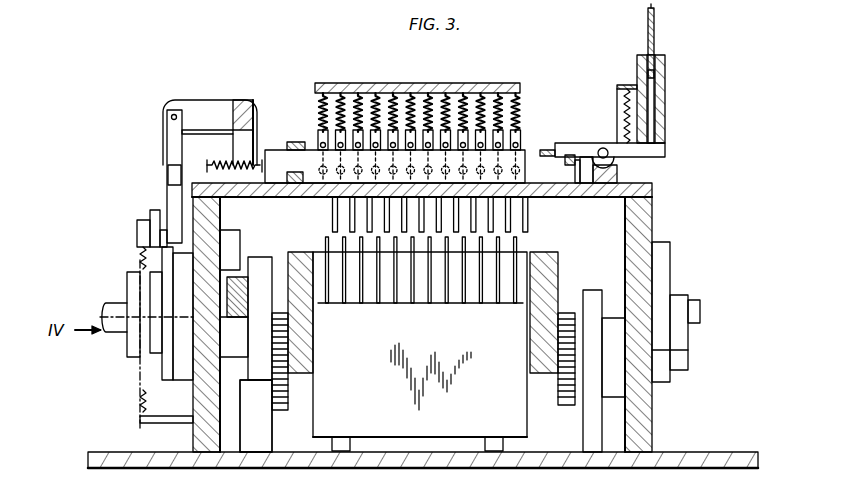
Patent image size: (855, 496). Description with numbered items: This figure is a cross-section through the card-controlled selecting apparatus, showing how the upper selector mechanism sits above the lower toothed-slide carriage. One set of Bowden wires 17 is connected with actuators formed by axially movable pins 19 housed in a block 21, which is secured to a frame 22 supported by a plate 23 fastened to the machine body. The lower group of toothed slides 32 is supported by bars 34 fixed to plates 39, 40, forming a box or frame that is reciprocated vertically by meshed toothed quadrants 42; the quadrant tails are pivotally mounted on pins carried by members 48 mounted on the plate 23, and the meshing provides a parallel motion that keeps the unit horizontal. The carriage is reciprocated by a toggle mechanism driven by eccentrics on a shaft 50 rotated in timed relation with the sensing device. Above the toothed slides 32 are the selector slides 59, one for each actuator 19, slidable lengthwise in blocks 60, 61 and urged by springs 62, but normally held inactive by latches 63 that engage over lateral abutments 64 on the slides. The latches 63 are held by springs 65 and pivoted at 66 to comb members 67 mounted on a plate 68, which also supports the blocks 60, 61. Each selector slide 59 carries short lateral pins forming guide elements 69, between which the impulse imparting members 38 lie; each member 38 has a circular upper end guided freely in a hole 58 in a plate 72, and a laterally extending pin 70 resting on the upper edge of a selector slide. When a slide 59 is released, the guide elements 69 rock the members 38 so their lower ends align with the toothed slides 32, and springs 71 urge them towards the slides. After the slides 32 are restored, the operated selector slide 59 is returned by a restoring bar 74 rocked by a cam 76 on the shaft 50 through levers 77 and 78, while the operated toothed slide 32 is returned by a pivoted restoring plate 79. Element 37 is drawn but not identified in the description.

The Bowden wires 17 is at (655, 25).
The axially movable pins 19 is at (651, 92).
The block 21 is at (663, 118).
The frame 22 is at (207, 440).
The plate 23 is at (140, 463).
The toothed slide 32 is at (494, 304).
The bar 34 is at (422, 304).
The pins 37 is at (500, 243).
The impulse imparting members 38 is at (508, 214).
The plate 39 is at (292, 258).
The plate 40 is at (552, 260).
The toothed quadrant 42 is at (279, 408).
The member 48 is at (272, 447).
The shaft 50 is at (122, 306).
The hole 58 is at (362, 86).
The selector slide 59 is at (522, 160).
The block 60 is at (293, 146).
The block 61 is at (548, 149).
The spring 62 is at (224, 164).
The latch 63 is at (585, 146).
The lateral abutment 64 is at (585, 166).
The spring 65 is at (625, 100).
The pivot 66 is at (602, 148).
The comb member 67 is at (617, 172).
The plate 68 is at (640, 190).
The guide elements 69 is at (316, 199).
The laterally extending pin 70 is at (337, 146).
The springs 71 is at (513, 93).
The plate 72 is at (458, 85).
The restoring bar 74 is at (250, 113).
The cam 76 is at (165, 365).
The lever 77 is at (156, 215).
The lever 78 is at (172, 205).
The restoring plate 79 is at (435, 428).